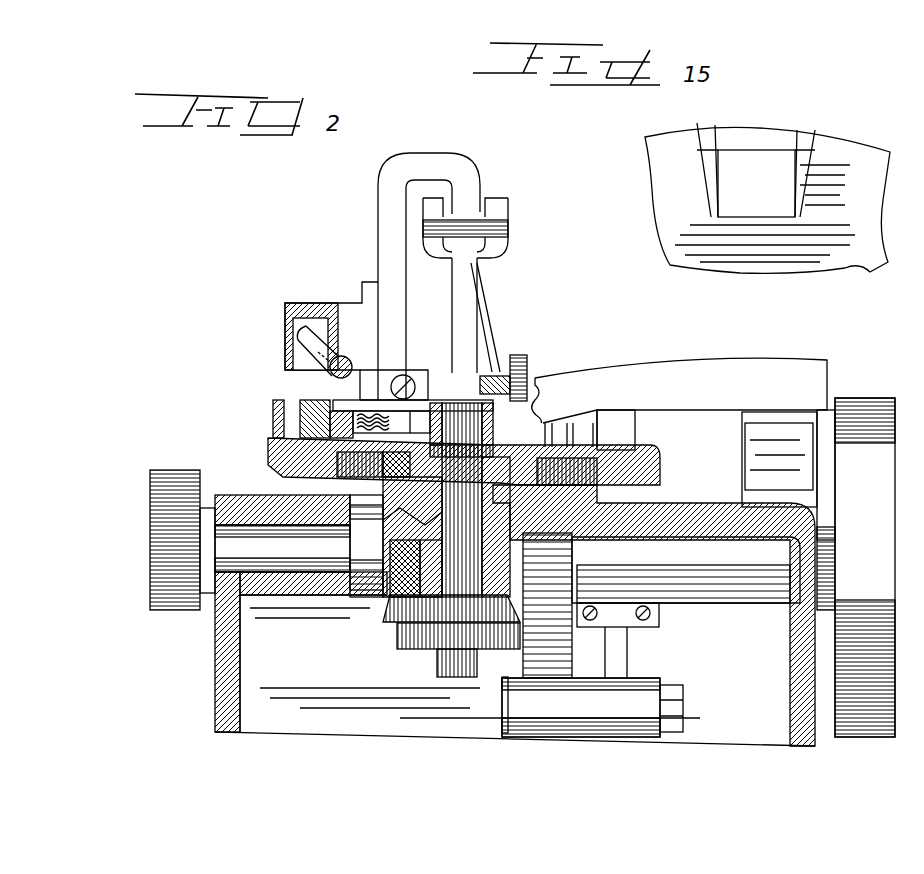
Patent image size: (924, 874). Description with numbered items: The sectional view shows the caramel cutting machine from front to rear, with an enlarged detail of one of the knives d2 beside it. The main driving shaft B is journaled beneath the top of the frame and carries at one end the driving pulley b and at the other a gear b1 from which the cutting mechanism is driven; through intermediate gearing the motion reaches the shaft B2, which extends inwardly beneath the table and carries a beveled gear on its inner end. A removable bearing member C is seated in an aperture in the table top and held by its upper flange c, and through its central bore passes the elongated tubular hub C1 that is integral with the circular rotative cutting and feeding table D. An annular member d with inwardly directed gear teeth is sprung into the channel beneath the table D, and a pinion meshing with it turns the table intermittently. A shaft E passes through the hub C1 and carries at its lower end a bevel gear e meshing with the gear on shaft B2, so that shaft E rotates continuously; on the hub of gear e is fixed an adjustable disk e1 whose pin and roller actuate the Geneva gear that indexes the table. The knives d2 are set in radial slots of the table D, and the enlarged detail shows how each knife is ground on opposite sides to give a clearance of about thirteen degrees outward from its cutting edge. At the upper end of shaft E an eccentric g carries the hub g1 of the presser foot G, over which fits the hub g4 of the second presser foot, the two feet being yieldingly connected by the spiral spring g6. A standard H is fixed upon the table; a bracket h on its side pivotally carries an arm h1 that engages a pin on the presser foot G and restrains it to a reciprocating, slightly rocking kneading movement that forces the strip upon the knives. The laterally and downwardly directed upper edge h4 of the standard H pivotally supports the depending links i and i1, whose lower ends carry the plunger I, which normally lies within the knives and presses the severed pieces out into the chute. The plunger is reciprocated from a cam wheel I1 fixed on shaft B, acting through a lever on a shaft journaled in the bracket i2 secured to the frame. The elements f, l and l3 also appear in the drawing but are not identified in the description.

In FIG. 2, the standard H is at (378, 220).
In FIG. 2, the upper edge of standard h4 is at (470, 186).
In FIG. 2, the depending link i is at (465, 296).
In FIG. 2, the depending link i1 is at (481, 338).
In FIG. 2, the bracket h is at (346, 318).
In FIG. 2, the arm h1 is at (305, 347).
In FIG. 2, the presser foot G is at (338, 402).
In FIG. 2, the eccentric g is at (495, 375).
In FIG. 2, the cutting and feeding table D is at (345, 416).
In FIG. 15, the cutting and feeding table D is at (850, 248).
In FIG. 2, the spiral spring g6 is at (352, 414).
In FIG. 2, the hub of presser foot g1 is at (516, 396).
In FIG. 2, the hub of second presser foot g4 is at (508, 422).
In FIG. 2, the annular member d is at (645, 450).
In FIG. 2, the shaft E is at (417, 650).
In FIG. 2, the driving pulley b is at (386, 588).
In FIG. 2, the gear b1 is at (396, 580).
In FIG. 2, the bevel gear e is at (400, 645).
In FIG. 2, the flange f is at (462, 582).
In FIG. 2, the adjustable disk e1 is at (452, 640).
In FIG. 2, the bearing member C is at (356, 601).
In FIG. 2, the shaft B2 is at (248, 542).
In FIG. 2, the flange c is at (318, 484).
In FIG. 2, the gear l3 is at (155, 505).
In FIG. 2, the main driving shaft B is at (610, 506).
In FIG. 2, the plunger I is at (788, 510).
In FIG. 2, the pulley l is at (863, 722).
In FIG. 2, the tubular hub C1 is at (497, 585).
In FIG. 2, the bracket i2 is at (624, 660).
In FIG. 2, the cam wheel I1 is at (551, 662).
In FIG. 15, the stationary knife d2 is at (806, 152).